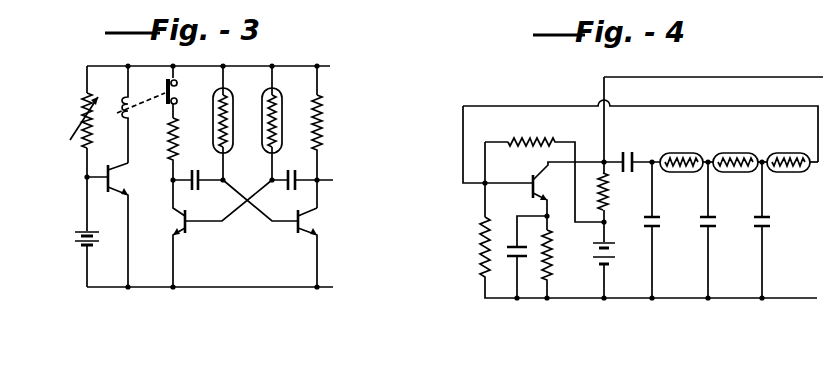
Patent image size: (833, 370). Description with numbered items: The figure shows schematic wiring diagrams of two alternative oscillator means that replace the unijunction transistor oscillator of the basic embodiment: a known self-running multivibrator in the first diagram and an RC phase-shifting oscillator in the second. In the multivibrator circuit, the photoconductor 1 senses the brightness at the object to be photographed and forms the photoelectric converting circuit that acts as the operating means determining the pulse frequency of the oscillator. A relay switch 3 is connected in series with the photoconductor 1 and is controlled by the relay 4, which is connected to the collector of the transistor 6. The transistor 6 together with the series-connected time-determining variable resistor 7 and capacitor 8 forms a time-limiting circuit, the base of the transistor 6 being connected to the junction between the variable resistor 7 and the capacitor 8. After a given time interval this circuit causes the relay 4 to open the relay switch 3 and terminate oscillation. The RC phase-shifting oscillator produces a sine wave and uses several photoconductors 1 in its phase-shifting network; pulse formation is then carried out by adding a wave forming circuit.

In FIG. 3, the photoconductor 1 is at (233, 123).
In FIG. 4, the photoconductor 1 is at (689, 153).
In FIG. 3, the relay switch 3 is at (178, 95).
In FIG. 3, the relay 4 is at (131, 118).
In FIG. 3, the transistor 6 is at (107, 225).
In FIG. 3, the time-determining variable resistor 7 is at (81, 120).
In FIG. 3, the capacitor 8 is at (74, 237).